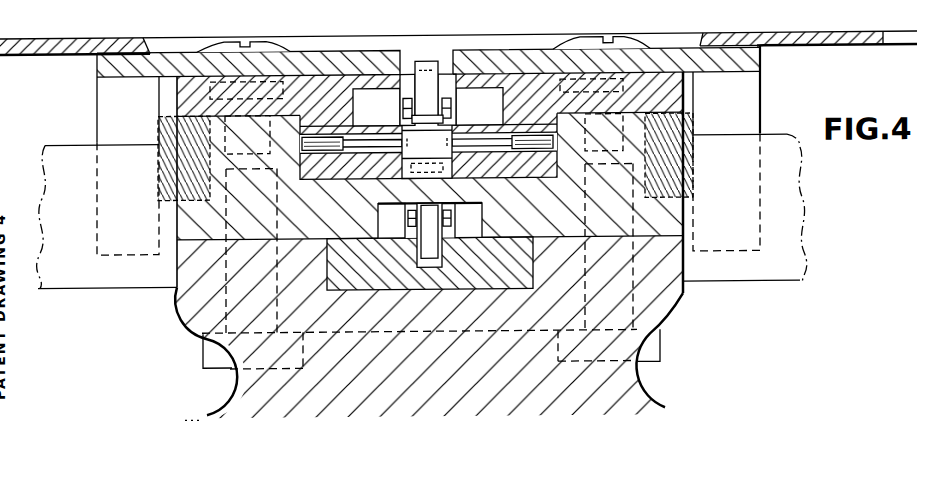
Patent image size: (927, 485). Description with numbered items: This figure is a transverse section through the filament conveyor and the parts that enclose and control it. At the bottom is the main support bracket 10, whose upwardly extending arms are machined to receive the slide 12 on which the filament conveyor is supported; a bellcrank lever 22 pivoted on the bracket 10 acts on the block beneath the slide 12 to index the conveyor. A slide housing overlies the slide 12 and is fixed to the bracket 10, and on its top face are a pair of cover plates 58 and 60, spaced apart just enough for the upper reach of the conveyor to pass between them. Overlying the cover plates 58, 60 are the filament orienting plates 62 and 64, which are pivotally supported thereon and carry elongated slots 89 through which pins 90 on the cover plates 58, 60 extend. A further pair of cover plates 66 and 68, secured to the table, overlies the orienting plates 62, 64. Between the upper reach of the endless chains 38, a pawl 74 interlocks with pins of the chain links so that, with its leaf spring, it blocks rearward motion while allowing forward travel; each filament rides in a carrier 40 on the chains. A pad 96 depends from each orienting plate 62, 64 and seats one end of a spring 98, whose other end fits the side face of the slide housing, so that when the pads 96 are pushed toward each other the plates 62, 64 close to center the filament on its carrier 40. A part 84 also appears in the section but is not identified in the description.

The main support bracket 10 is at (686, 303).
The slide 12 is at (382, 289).
The bellcrank lever 22 is at (450, 0).
The endless chains 38 is at (399, 105).
The carrier 40 is at (438, 62).
The cover plate 58 is at (177, 104).
The cover plate 60 is at (678, 102).
The filament orienting plate 62 is at (172, 50).
The filament orienting plate 64 is at (678, 47).
The cover plate 66 is at (15, 35).
The cover plate 68 is at (783, 35).
The pawl 74 is at (427, 150).
The tie rod 84 is at (304, 150).
The elongated slots 89 is at (305, 50).
The pins 90 is at (268, 32).
The pad 96 is at (97, 105).
The spring 98 is at (161, 129).